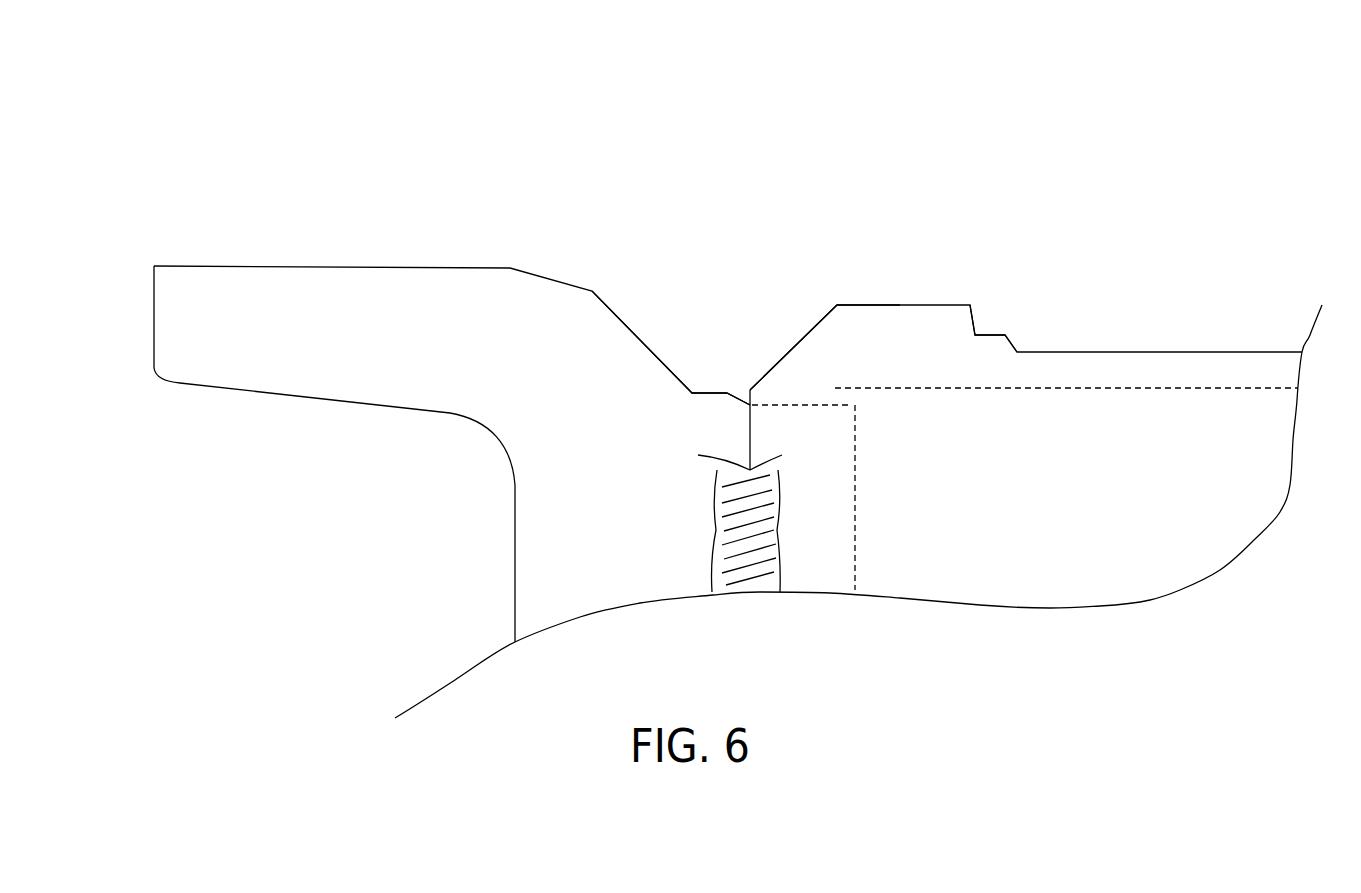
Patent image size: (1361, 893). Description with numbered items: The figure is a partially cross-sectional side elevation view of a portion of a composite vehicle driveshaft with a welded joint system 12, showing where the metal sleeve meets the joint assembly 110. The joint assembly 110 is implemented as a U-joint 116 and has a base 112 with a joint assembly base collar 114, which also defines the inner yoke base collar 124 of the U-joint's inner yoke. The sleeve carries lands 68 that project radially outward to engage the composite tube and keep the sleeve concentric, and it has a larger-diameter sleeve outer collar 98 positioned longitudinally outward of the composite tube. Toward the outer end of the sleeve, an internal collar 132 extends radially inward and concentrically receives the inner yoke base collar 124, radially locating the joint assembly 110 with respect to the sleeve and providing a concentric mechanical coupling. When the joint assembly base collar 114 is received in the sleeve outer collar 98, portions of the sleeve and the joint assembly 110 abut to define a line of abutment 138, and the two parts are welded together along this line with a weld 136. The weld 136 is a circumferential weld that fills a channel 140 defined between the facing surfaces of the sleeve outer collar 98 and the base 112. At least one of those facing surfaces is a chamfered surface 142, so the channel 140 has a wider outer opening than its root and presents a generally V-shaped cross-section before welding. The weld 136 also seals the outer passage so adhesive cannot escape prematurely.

The welded joint system 12 is at (771, 150).
The lands 68 is at (990, 332).
The sleeve outer collar 98 is at (855, 272).
The joint assembly 110 is at (299, 140).
The base 112 is at (622, 262).
The joint assembly base collar 114 is at (850, 543).
The U-joint 116 is at (114, 250).
The inner yoke base collar 124 is at (860, 577).
The internal collar 132 is at (792, 410).
The weld 136 is at (712, 540).
The line of abutment 138 is at (748, 442).
The channel 140 is at (751, 357).
The chamfered surface 142 is at (741, 392).